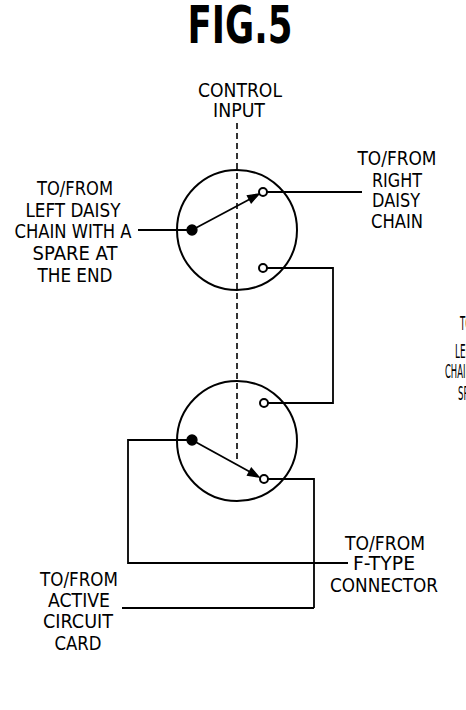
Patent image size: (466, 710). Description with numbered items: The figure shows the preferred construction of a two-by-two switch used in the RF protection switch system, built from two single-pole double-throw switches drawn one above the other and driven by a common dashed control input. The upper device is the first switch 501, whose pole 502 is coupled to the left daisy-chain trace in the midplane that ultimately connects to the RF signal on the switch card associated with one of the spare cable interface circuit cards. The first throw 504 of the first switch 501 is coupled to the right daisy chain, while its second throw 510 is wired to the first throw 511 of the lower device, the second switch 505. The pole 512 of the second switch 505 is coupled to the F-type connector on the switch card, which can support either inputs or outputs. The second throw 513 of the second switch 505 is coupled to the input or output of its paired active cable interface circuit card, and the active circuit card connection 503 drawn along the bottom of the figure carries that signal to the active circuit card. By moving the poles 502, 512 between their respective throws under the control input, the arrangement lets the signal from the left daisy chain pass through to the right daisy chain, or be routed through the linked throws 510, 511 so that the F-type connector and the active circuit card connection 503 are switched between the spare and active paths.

The first switch 501 is at (203, 180).
The pole of the first switch 502 is at (147, 228).
The connection to active circuit card 503 is at (207, 610).
The first throw of the first switch 504 is at (329, 191).
The second switch 505 is at (304, 441).
The second throw of the first switch 510 is at (317, 267).
The first throw of the second switch 511 is at (288, 402).
The pole of the second switch 512 is at (140, 440).
The second throw of the second switch 513 is at (291, 484).